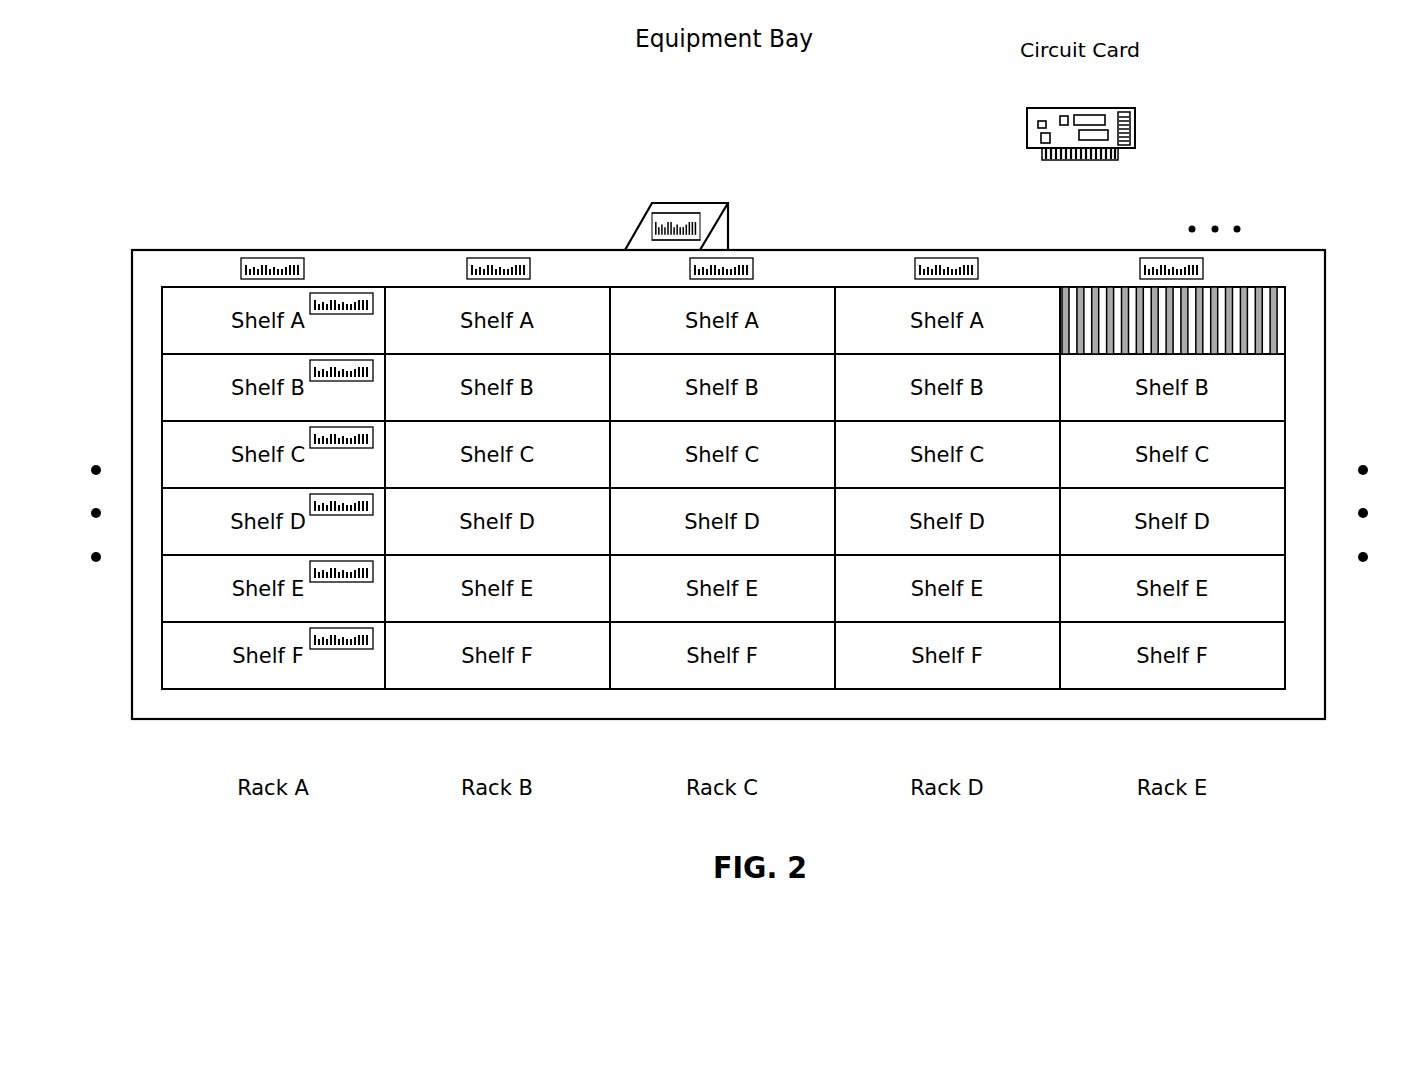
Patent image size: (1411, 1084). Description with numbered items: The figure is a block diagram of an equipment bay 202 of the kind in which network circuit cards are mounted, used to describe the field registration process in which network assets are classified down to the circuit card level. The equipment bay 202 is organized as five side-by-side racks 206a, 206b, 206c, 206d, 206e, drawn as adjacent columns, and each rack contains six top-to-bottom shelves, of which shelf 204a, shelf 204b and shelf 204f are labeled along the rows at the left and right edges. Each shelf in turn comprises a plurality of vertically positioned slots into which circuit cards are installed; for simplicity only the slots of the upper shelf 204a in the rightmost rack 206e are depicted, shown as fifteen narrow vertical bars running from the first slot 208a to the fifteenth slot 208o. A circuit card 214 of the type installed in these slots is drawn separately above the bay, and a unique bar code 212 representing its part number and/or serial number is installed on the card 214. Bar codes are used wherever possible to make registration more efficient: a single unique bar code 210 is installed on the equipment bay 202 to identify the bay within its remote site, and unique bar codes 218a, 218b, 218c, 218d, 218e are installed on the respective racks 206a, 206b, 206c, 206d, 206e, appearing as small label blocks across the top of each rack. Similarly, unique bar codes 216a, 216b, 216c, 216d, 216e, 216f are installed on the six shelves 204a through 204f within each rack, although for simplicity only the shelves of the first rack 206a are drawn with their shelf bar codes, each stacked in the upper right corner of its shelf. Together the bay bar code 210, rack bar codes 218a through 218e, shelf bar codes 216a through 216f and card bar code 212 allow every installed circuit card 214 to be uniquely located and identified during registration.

The equipment bay 202 is at (716, 128).
The shelf 204a is at (175, 341).
The shelf 204b is at (175, 411).
The shelf 204f is at (175, 673).
The rack 206a is at (230, 690).
The rack 206b is at (458, 690).
The rack 206c is at (683, 690).
The rack 206d is at (913, 690).
The rack 206e is at (1138, 690).
The slot 208a is at (1070, 287).
The slot 208o is at (1277, 287).
The bar code 210 is at (698, 213).
The bar code 212 is at (1131, 128).
The circuit card 214 is at (1038, 108).
The bar code 216a is at (358, 293).
The bar code 216b is at (358, 360).
The bar code 216c is at (358, 427).
The bar code 216d is at (358, 494).
The bar code 216e is at (358, 561).
The bar code 216f is at (358, 628).
The bar code 218a is at (290, 258).
The bar code 218b is at (515, 258).
The bar code 218c is at (752, 258).
The bar code 218d is at (970, 258).
The bar code 218e is at (1188, 257).